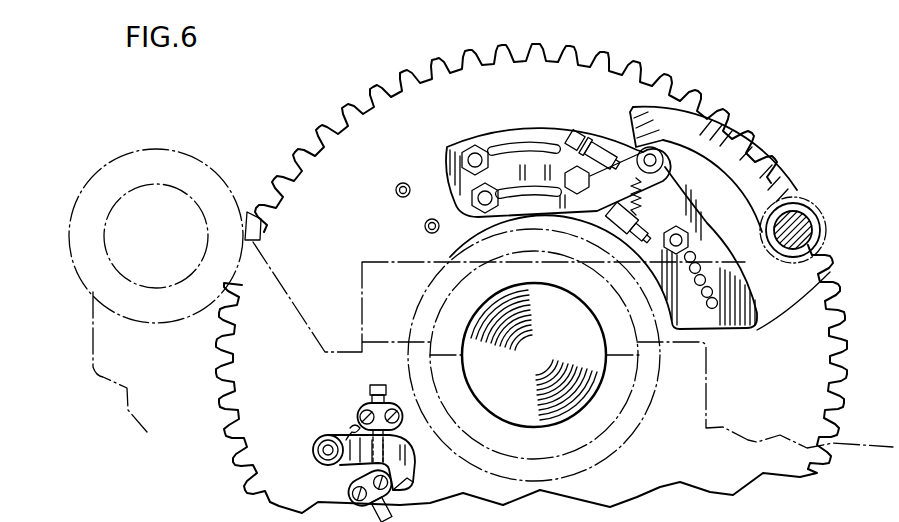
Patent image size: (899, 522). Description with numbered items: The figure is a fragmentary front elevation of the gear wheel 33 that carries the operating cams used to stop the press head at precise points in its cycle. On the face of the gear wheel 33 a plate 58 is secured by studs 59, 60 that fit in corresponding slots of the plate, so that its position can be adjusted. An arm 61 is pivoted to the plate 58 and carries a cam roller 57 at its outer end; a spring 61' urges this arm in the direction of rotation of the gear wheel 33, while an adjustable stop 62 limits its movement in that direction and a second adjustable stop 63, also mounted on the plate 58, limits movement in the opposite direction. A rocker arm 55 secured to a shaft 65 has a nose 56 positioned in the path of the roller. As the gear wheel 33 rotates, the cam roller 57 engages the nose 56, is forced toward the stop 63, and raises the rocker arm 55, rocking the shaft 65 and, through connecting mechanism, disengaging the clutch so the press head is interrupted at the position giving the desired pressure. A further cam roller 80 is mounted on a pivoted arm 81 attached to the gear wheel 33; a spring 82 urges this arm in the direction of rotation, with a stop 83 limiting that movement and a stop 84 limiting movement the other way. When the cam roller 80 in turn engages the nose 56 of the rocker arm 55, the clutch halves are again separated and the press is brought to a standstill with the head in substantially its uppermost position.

The spur gear 33 is at (835, 352).
The rocker arm 55 is at (752, 160).
The nose 56 is at (634, 122).
The cam roller 57 is at (665, 163).
The plate 58 is at (700, 213).
The stud 59 is at (463, 173).
The stud 60 is at (689, 238).
The arm 61 is at (575, 211).
The spring 61' is at (653, 196).
The adjustable stop 62 is at (650, 230).
The adjustable stop 63 is at (583, 141).
The shaft 65 is at (813, 227).
The cam roller 80 is at (313, 446).
The pivoted arm 81 is at (406, 457).
The spring 82 is at (352, 432).
The stop 83 is at (382, 396).
The stop 84 is at (360, 472).